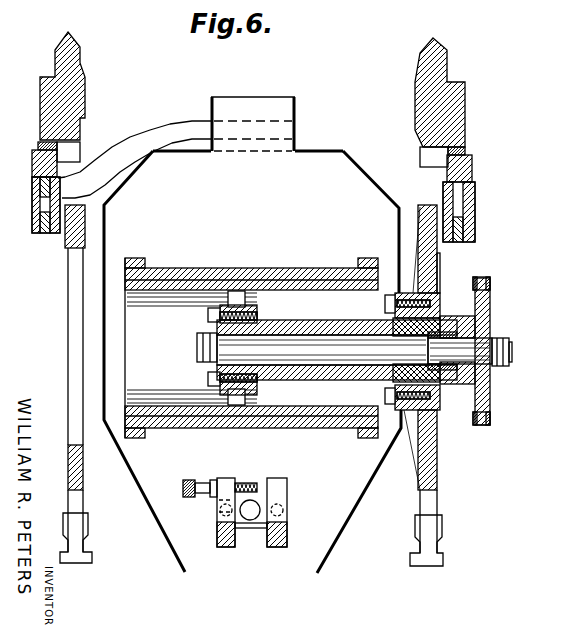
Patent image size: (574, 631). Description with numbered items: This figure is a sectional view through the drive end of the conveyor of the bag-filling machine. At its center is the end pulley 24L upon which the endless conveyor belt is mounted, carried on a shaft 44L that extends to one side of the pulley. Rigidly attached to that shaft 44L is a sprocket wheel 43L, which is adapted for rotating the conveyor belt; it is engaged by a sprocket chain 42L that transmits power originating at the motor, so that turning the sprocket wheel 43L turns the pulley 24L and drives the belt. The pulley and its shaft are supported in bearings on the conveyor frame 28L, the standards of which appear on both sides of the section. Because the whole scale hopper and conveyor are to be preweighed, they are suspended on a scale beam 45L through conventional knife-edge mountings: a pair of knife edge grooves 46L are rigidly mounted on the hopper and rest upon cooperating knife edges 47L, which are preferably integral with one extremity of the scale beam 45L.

The end pulley 24L is at (123, 278).
The conveyor frame 28L is at (70, 279).
The sprocket chain 42L is at (492, 420).
The sprocket wheel 43L is at (492, 298).
The shaft 44L is at (512, 350).
The scale beam 45L is at (50, 90).
The knife edge grooves 46L is at (40, 135).
The knife edges 47L is at (43, 152).